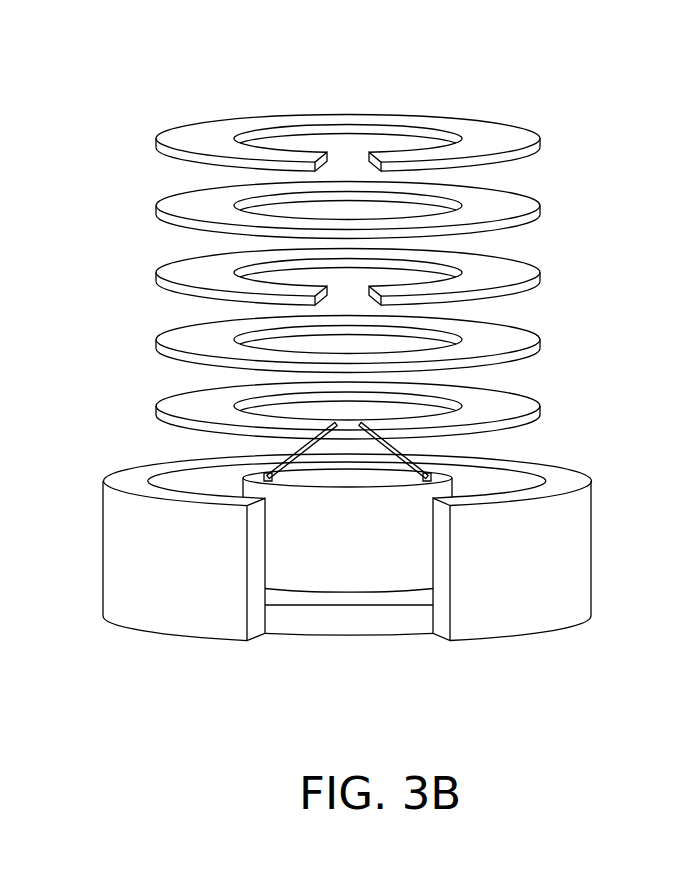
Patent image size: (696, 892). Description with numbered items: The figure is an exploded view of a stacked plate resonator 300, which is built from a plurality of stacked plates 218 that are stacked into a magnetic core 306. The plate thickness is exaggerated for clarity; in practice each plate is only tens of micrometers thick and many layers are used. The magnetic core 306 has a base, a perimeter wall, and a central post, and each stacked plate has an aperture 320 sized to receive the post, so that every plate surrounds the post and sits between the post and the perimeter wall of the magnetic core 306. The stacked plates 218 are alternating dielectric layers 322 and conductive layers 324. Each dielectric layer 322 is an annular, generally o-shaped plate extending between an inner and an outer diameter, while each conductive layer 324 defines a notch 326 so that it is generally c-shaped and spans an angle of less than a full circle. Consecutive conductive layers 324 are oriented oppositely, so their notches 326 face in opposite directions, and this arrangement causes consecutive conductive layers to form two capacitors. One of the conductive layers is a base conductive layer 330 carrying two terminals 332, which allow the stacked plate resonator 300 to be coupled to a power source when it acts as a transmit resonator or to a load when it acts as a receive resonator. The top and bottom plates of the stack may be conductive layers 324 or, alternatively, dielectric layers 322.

The stacked plates 218 is at (155, 118).
The aperture 320 is at (297, 145).
The notch 326 is at (353, 150).
The conductive layer 324 is at (523, 137).
The dielectric layer 322 is at (515, 205).
The base conductive layer 330 is at (515, 408).
The magnetic core 306 is at (643, 660).
The stacked plate resonator 300 is at (90, 637).
The terminals 332 is at (427, 484).